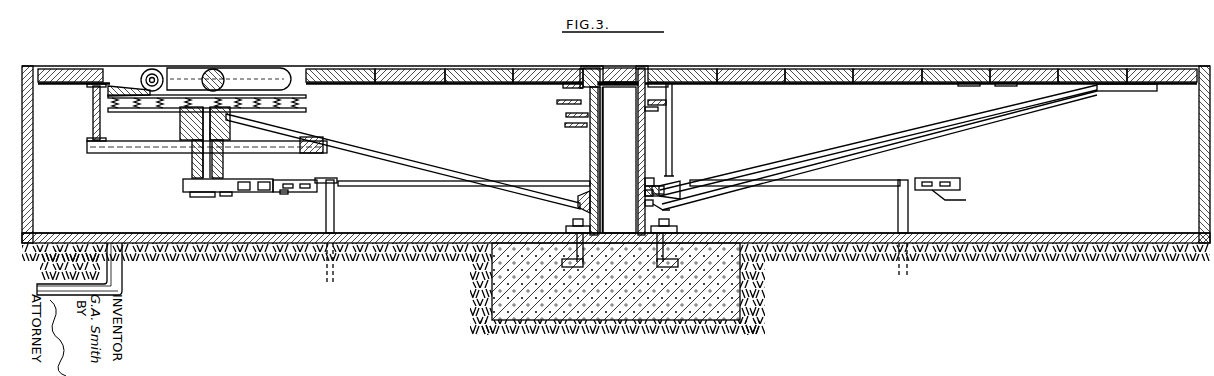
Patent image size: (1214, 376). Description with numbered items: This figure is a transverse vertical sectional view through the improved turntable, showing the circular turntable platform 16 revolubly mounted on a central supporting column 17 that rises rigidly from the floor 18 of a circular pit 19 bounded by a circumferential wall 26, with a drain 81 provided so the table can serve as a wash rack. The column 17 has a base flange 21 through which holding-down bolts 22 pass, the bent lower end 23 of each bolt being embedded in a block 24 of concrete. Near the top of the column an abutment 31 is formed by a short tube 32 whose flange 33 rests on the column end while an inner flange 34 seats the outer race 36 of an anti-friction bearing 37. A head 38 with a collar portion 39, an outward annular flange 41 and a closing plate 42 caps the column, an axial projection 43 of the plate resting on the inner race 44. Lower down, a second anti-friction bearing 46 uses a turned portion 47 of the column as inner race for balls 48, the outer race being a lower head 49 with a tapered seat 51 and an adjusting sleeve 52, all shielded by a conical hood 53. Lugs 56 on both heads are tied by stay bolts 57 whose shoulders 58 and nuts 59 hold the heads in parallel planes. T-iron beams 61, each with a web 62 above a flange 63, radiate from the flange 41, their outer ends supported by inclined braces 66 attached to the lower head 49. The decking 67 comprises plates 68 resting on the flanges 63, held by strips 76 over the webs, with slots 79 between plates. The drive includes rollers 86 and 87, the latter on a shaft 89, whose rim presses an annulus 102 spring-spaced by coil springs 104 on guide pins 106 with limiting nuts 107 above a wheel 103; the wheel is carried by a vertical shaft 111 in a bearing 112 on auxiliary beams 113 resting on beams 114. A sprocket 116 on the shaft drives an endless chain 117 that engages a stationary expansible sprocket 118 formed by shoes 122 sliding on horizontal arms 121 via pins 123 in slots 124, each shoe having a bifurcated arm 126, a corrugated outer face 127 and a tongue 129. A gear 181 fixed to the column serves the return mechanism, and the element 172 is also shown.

The turntable platform 16 is at (367, 48).
The central supporting column 17 is at (570, 142).
The floor 18 is at (799, 235).
The pit 19 is at (34, 162).
The base flange 21 is at (665, 226).
The holding-down bolts 22 is at (623, 258).
The lower end of bolt 23 is at (668, 265).
The block of concrete 24 is at (747, 318).
The circumferential wall 26 is at (1203, 212).
The abutment 31 is at (619, 160).
The tube 32 is at (560, 100).
The flange 33 is at (652, 70).
The flange 34 is at (625, 92).
The outer race 36 is at (642, 67).
The anti-friction bearing 37 is at (583, 115).
The head 38 is at (592, 72).
The collar portion 39 is at (572, 68).
The annular flange 41 is at (559, 85).
The plate 42 is at (617, 67).
The axial projection 43 is at (633, 67).
The inner race 44 is at (603, 67).
The anti-friction bearing 46 is at (682, 175).
The turned portion 47 is at (645, 186).
The balls 48 is at (644, 193).
The lower head 49 is at (645, 205).
The seat 51 is at (660, 207).
The sleeve 52 is at (645, 190).
The conical hood 53 is at (568, 187).
The lugs 56 is at (660, 88).
The stay bolt 57 is at (673, 148).
The shoulder 58 is at (676, 190).
The nuts 59 is at (677, 81).
The beams 61 is at (1016, 82).
The web 62 is at (1031, 78).
The flange 63 is at (969, 85).
The brace 66 is at (1075, 67).
The decking 67 is at (379, 68).
The plates 68 is at (408, 72).
The strip 76 is at (323, 68).
The slot 79 is at (449, 70).
The drain 81 is at (118, 283).
The roller 86 is at (180, 71).
The roller 87 is at (251, 70).
The shaft 89 is at (215, 69).
The annulus 102 is at (110, 96).
The wheel 103 is at (318, 131).
The coil springs 104 is at (308, 97).
The guide pins 106 is at (135, 104).
The nut 107 is at (308, 111).
The vertical shaft 111 is at (206, 163).
The bearing 112 is at (219, 172).
The auxiliary beams 113 is at (115, 153).
The beams 114 is at (92, 108).
The sprocket 116 is at (202, 192).
The endless chain 117 is at (347, 193).
The expansible sprocket 118 is at (287, 200).
The horizontal arm 121 is at (318, 179).
The shoe 122 is at (252, 192).
The pins 123 is at (300, 182).
The slots 124 is at (287, 183).
The bifurcated arm 126 is at (276, 192).
The outer face 127 is at (962, 182).
The tongue 129 is at (967, 199).
The plate 172 is at (570, 126).
The gear 181 is at (655, 113).